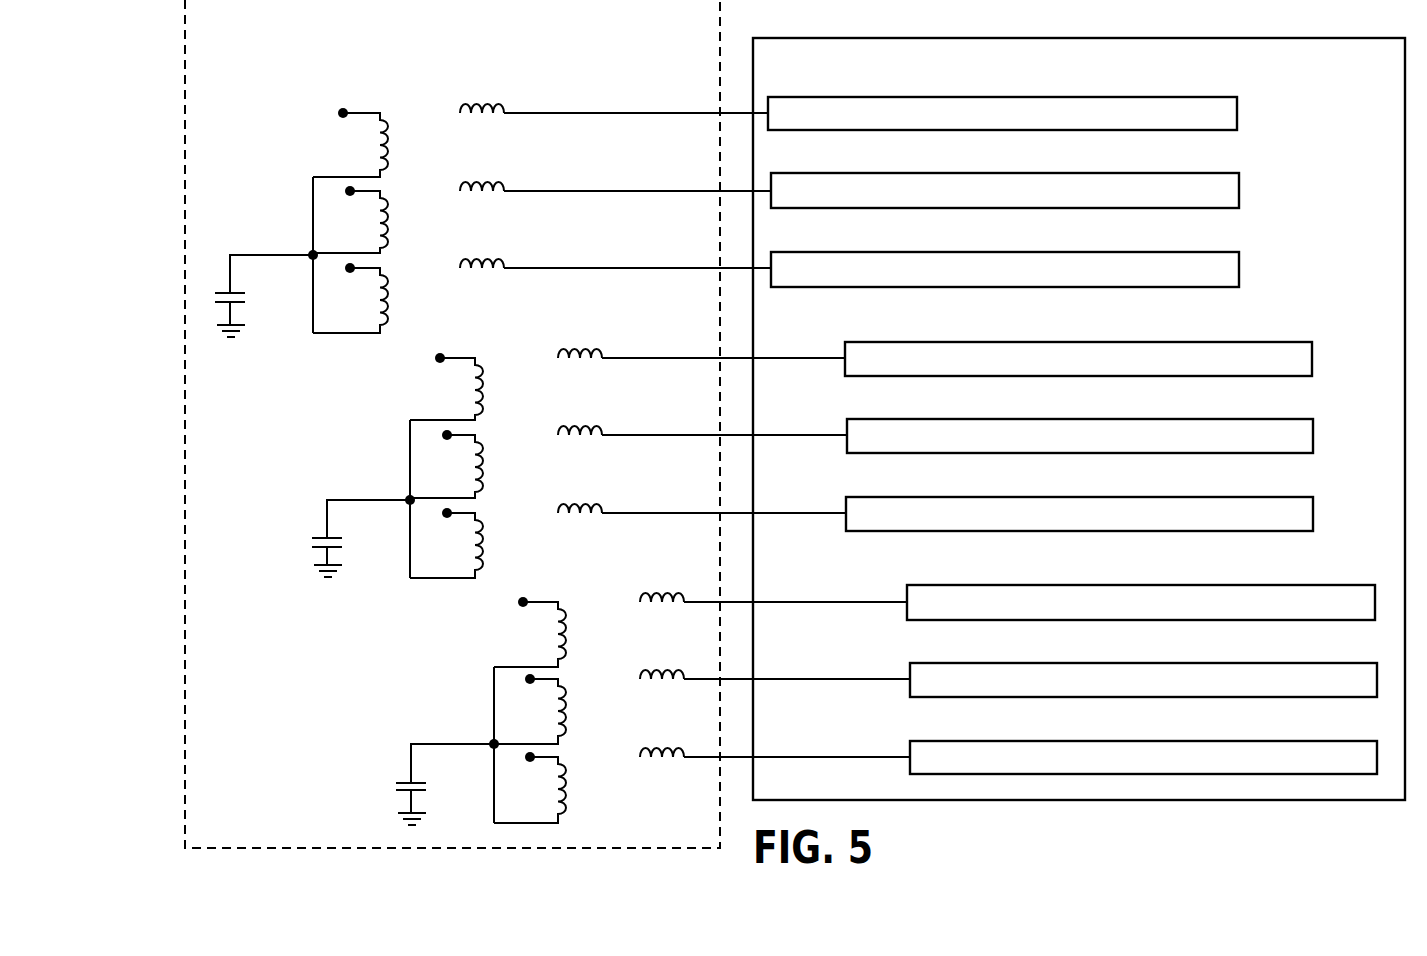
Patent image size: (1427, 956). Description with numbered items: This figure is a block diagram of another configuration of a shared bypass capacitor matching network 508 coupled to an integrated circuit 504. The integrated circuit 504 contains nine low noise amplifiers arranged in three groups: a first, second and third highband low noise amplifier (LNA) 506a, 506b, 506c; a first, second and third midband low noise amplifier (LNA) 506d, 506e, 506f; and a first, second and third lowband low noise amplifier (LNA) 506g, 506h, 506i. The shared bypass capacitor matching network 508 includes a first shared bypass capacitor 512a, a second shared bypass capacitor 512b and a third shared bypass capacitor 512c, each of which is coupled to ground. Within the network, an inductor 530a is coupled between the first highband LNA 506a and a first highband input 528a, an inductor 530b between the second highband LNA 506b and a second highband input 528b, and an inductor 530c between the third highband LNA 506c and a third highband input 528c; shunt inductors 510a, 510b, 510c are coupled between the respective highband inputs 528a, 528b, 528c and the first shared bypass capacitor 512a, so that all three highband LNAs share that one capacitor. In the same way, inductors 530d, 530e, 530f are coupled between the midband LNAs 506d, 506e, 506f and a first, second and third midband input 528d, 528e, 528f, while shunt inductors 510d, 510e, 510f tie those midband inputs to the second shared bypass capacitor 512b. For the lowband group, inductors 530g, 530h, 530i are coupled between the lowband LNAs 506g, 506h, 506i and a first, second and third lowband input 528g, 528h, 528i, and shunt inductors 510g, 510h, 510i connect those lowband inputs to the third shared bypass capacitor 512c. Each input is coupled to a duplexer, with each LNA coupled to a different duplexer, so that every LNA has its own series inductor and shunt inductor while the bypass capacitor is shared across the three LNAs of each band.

The integrated circuit 504 is at (1188, 77).
The shared bypass capacitor matching network 508 is at (693, 27).
The first highband low noise amplifier (LNA) 506a is at (1166, 123).
The second highband low noise amplifier (LNA) 506b is at (1168, 200).
The third highband low noise amplifier (LNA) 506c is at (1168, 278).
The first midband low noise amplifier (LNA) 506d is at (1236, 368).
The second midband low noise amplifier (LNA) 506e is at (1238, 446).
The third midband low noise amplifier (LNA) 506f is at (1240, 525).
The first lowband low noise amplifier (LNA) 506g is at (1300, 612).
The second lowband low noise amplifier (LNA) 506h is at (1302, 690).
The third lowband low noise amplifier (LNA) 506i is at (1303, 767).
The shunt inductor 510a is at (379, 138).
The shunt inductor 510b is at (381, 216).
The shunt inductor 510c is at (381, 296).
The shunt inductor 510d is at (475, 385).
The shunt inductor 510e is at (478, 463).
The shunt inductor 510f is at (475, 543).
The shunt inductor 510g is at (558, 628).
The shunt inductor 510h is at (561, 708).
The shunt inductor 510i is at (557, 783).
The first shared bypass capacitor 512a is at (217, 302).
The second shared bypass capacitor 512b is at (324, 547).
The third shared bypass capacitor 512c is at (400, 789).
The first highband input 528a is at (344, 109).
The second highband input 528b is at (349, 189).
The third highband input 528c is at (349, 266).
The first midband input 528d is at (440, 356).
The second midband input 528e is at (446, 433).
The third midband input 528f is at (446, 511).
The first lowband input 528g is at (522, 600).
The second lowband input 528h is at (529, 677).
The third lowband input 528i is at (529, 755).
The inductor 530a is at (472, 94).
The inductor 530b is at (472, 172).
The inductor 530c is at (472, 249).
The inductor 530d is at (570, 339).
The inductor 530e is at (570, 416).
The inductor 530f is at (570, 494).
The inductor 530g is at (652, 584).
The inductor 530h is at (652, 662).
The inductor 530i is at (652, 739).